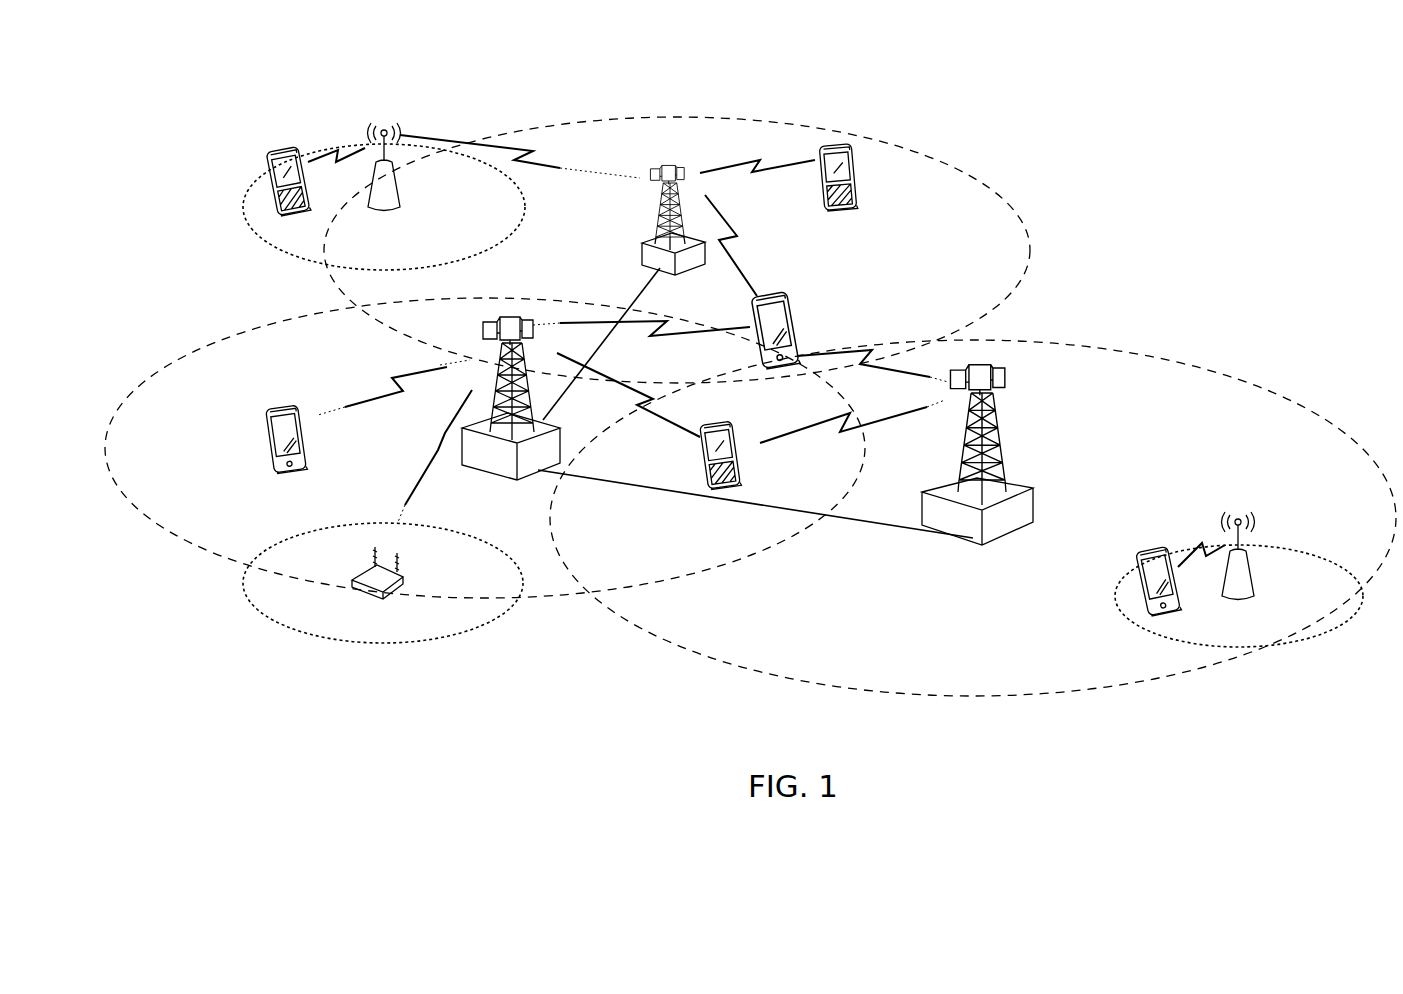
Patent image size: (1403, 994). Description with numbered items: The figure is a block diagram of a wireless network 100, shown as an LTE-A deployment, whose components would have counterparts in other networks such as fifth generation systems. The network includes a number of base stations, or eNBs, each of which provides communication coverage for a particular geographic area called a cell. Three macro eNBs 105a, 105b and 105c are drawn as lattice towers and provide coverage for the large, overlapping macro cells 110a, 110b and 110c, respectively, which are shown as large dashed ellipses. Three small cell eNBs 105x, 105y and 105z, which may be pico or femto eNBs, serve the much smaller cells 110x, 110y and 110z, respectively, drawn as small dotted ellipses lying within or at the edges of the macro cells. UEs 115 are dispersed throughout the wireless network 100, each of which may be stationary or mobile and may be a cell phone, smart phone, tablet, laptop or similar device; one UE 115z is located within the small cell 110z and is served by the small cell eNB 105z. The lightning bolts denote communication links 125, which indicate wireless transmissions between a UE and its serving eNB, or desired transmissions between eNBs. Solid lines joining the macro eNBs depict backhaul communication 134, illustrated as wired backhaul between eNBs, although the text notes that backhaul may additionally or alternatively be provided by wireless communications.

The wireless network 100 is at (1171, 122).
The macro eNB 105a is at (493, 472).
The macro eNB 105b is at (642, 244).
The macro eNB 105c is at (1002, 535).
The small cell eNB 105x is at (402, 587).
The small cell eNB 105y is at (397, 206).
The small cell eNB 105z is at (1248, 595).
The macro cell 110a is at (282, 325).
The macro cell 110b is at (780, 120).
The macro cell 110c is at (1212, 370).
The small cell 110x is at (327, 642).
The small cell 110y is at (245, 218).
The small cell 110z is at (1328, 628).
The UE 115 is at (268, 159).
The UE 115z is at (1140, 554).
The communication link 125 is at (340, 148).
The backhaul communication 134 is at (637, 300).